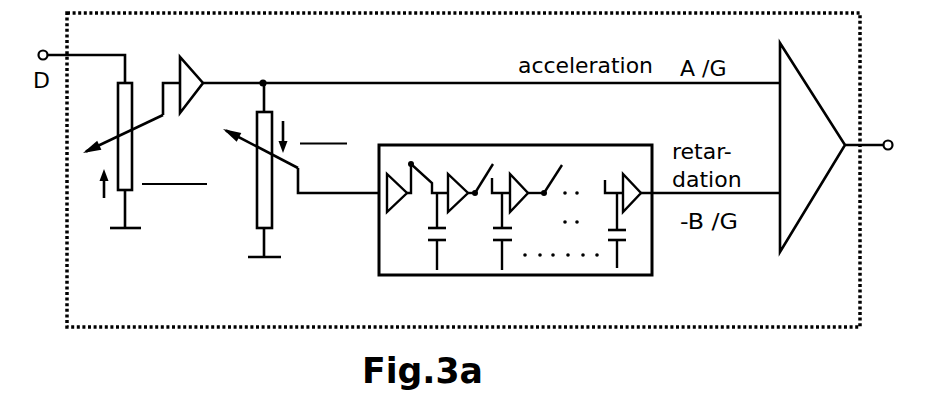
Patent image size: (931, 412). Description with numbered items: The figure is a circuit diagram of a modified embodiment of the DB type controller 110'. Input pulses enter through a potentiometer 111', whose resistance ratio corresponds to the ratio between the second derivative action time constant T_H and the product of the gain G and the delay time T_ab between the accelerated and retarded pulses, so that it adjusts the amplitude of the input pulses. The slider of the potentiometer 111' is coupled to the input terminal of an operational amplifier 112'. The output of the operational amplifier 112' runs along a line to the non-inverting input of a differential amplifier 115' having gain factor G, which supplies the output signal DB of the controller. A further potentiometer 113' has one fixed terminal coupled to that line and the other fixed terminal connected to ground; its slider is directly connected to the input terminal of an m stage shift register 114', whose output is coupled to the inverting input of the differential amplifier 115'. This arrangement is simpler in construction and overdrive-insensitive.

The DB type controller 110' is at (463, 170).
The potentiometer 111' is at (146, 174).
The operational amplifier 112' is at (471, 74).
The potentiometer 113' is at (301, 188).
The m stage shift register 114' is at (579, 198).
The differential amplifier 115' is at (837, 158).